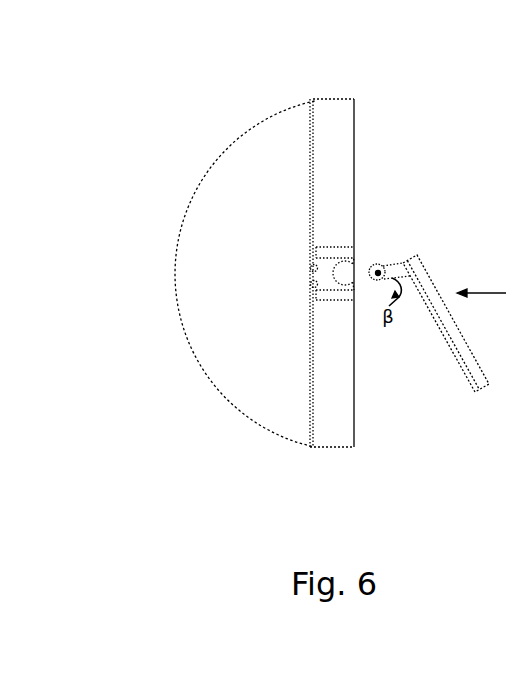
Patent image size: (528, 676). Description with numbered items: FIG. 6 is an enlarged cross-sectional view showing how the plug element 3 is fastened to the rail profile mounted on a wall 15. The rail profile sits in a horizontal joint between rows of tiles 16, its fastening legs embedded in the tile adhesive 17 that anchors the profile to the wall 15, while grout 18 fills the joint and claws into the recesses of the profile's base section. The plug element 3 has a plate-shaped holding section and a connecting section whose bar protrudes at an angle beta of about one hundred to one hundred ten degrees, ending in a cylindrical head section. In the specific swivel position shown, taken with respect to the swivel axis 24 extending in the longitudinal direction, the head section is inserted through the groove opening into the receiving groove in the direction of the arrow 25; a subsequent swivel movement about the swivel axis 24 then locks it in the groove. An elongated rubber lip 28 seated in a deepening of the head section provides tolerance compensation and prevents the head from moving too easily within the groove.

The plug element 3 is at (452, 374).
The wall 15 is at (238, 397).
The tiles 16 is at (323, 178).
The tile adhesive 17 is at (313, 122).
The grout 18 is at (355, 250).
The swivel axis 24 is at (381, 267).
The rubber lip 28 is at (413, 235).
The arrow 25 is at (478, 292).